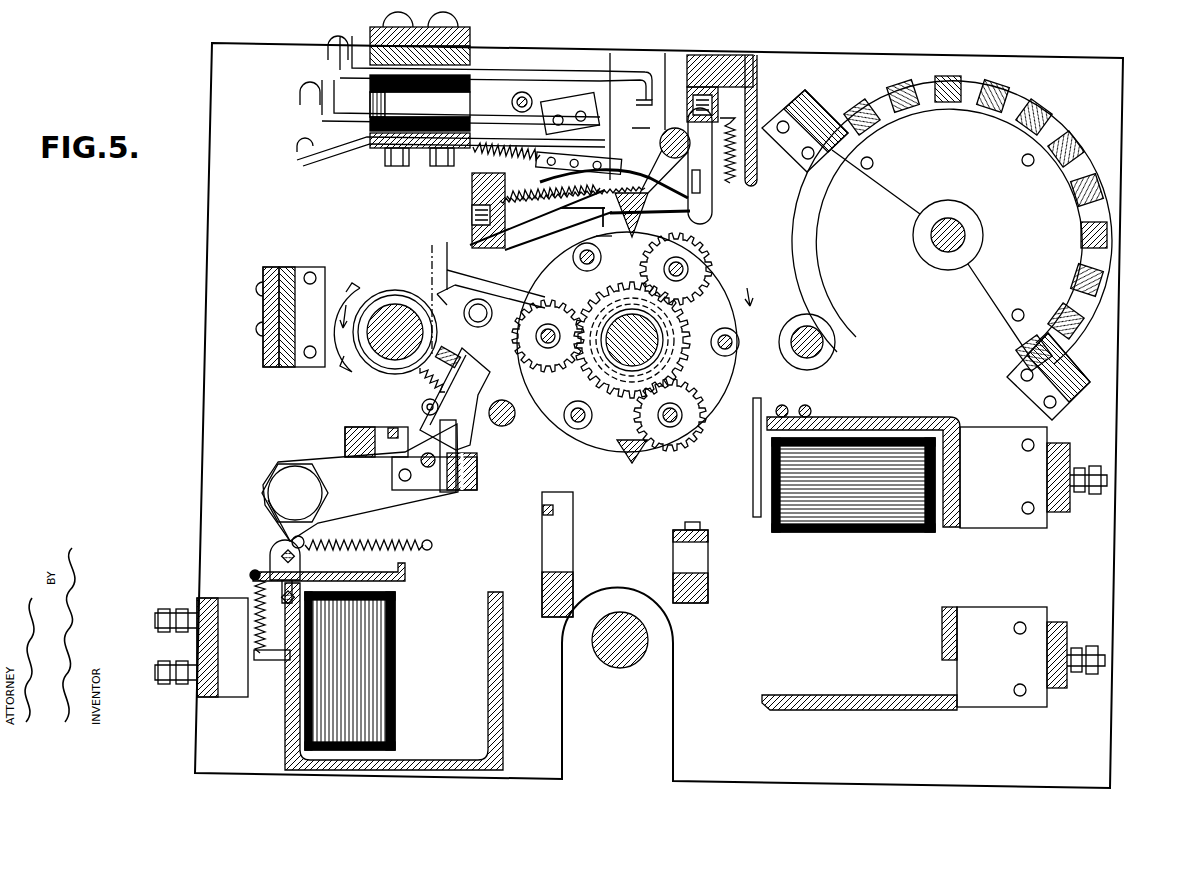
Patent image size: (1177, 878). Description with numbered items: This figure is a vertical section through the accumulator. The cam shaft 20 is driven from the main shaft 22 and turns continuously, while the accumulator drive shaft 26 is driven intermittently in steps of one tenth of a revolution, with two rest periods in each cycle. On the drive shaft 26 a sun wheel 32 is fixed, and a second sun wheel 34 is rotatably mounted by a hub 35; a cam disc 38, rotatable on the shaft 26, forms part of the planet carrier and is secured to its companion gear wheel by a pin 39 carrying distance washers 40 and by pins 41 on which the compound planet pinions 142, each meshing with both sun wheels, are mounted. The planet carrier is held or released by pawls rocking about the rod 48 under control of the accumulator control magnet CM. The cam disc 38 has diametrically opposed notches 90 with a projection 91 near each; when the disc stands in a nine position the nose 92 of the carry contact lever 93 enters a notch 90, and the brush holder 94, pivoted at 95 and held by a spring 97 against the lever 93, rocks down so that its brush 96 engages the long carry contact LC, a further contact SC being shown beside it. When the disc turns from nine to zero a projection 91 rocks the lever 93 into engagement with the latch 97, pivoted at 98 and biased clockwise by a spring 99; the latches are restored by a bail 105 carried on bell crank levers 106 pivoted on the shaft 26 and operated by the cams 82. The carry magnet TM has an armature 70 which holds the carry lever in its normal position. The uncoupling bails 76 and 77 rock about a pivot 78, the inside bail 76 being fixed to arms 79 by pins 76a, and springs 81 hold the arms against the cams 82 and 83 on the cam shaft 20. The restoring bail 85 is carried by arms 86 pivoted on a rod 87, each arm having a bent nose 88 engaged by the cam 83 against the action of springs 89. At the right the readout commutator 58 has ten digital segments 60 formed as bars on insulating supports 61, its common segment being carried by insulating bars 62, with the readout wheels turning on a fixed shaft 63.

The cam shaft 20 is at (390, 345).
The main shaft 22 is at (621, 652).
The accumulator drive shaft 26 is at (640, 350).
The sun wheel 32 is at (585, 290).
The second sun wheel 34 is at (583, 373).
The hub 35 is at (620, 368).
The cam disc 38 is at (540, 391).
The pin 39 is at (735, 347).
The distance washers 40 is at (730, 336).
The pins 41 is at (697, 262).
The rod 48 is at (548, 505).
The readout commutator 58 is at (1090, 172).
The digital segments 60 is at (1070, 330).
The insulating supports 61 is at (1070, 217).
The insulating bars 62 is at (800, 106).
The fixed shaft 63 is at (956, 236).
The armature 70 is at (368, 576).
The first uncoupling bail 76 is at (454, 492).
The pins 76a is at (443, 538).
The second uncoupling bail 77 is at (477, 475).
The pivot 78 is at (280, 487).
The arms 79 is at (423, 375).
The springs 81 is at (354, 545).
The cams 82 is at (352, 362).
The cams 83 is at (362, 292).
The restoring bail 85 is at (407, 485).
The arms 86 is at (440, 438).
The rod 87 is at (350, 430).
The nose 88 is at (458, 364).
The springs 89 is at (432, 262).
The notches 90 is at (620, 472).
The projection 91 is at (606, 228).
The nose 92 is at (692, 214).
The carry contact lever 93 is at (630, 195).
The brush holder 94 is at (575, 108).
The pivot 95 is at (524, 93).
The brush 96 is at (648, 98).
The latch 97 is at (512, 158).
The pivot 98 is at (715, 118).
The spring 99 is at (748, 178).
The bail 105 is at (748, 162).
The bell crank levers 106 is at (498, 292).
The compound planet pinions 142 is at (703, 288).
The switch contact SC is at (647, 100).
The long carry contact LC is at (635, 116).
The accumulator control magnet CM is at (872, 450).
The carry magnet TM is at (377, 717).